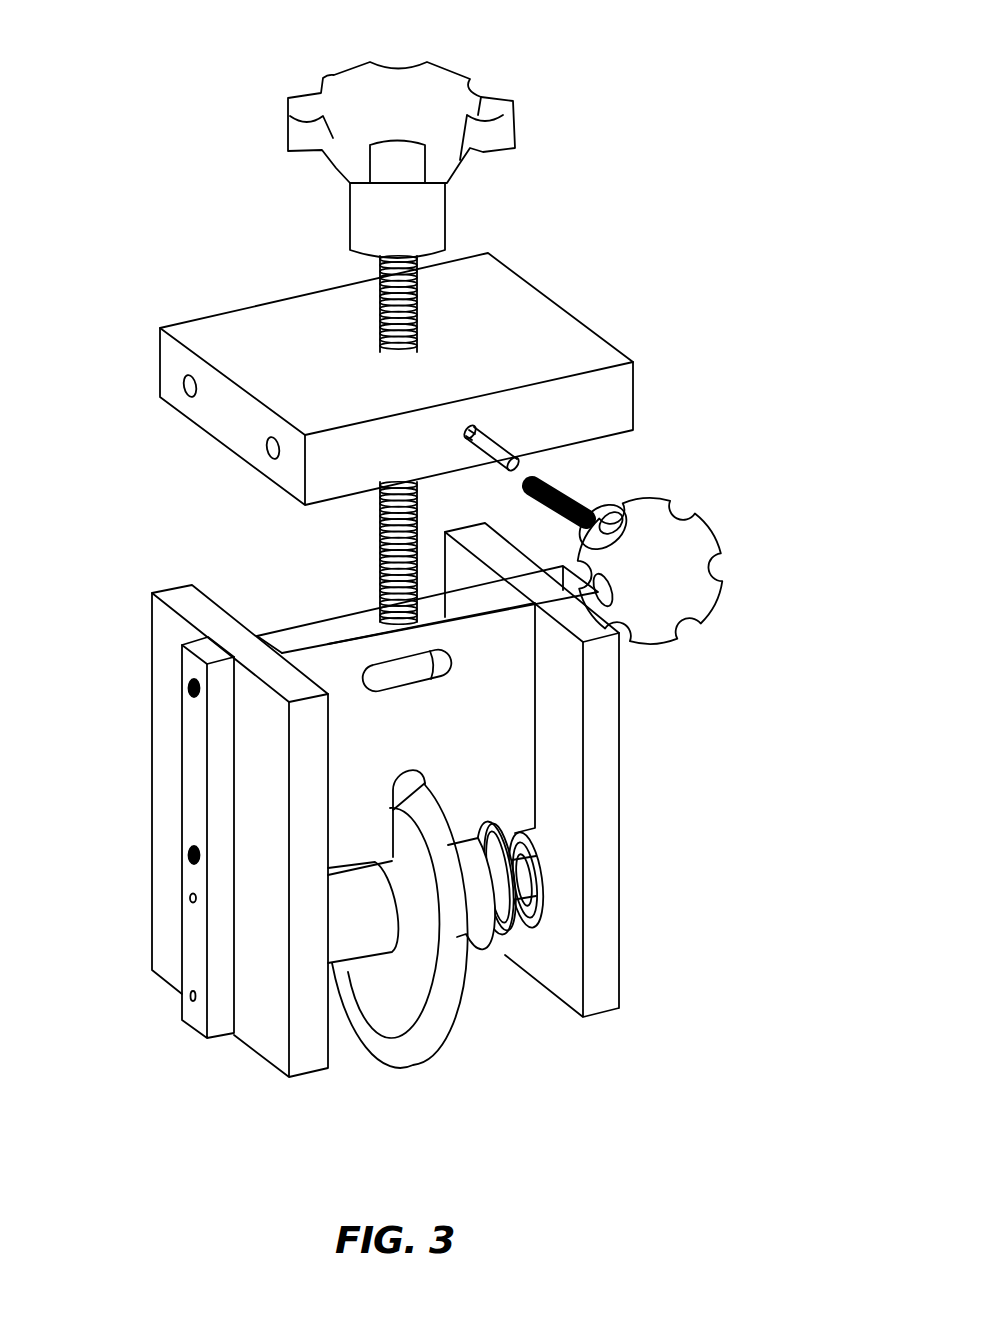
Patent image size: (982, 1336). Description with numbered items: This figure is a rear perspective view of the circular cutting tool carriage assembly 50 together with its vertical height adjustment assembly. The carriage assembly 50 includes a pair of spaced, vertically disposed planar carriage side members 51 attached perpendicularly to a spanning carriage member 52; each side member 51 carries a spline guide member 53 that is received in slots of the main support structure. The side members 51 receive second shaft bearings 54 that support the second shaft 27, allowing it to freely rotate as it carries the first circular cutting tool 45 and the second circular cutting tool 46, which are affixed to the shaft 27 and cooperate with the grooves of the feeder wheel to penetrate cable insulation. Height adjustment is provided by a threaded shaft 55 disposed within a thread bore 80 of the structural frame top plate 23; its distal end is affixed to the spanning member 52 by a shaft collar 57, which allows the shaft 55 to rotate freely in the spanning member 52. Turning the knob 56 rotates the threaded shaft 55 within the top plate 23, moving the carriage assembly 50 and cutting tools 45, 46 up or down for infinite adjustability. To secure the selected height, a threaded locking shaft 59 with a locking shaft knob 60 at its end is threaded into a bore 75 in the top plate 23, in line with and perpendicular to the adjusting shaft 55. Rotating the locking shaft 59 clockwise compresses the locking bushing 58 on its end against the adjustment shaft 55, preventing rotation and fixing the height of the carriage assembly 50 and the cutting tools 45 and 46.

The structural frame top plate 23 is at (227, 332).
The second shaft 27 is at (350, 942).
The first circular cutting tool 45 is at (422, 1047).
The second circular cutting tool 46 is at (500, 980).
The cutting tool carriage assembly 50 is at (425, 715).
The carriage side member 51 is at (603, 988).
The spanning carriage member 52 is at (290, 642).
The spline guide member 53 is at (193, 1017).
The second shaft bearings 54 is at (541, 916).
The threaded shaft 55 is at (418, 302).
The knob 56 is at (463, 68).
The shaft collar 57 is at (385, 640).
The locking bushing 58 is at (495, 447).
The threaded locking shaft 59 is at (573, 490).
The locking shaft knob 60 is at (717, 528).
The bore 75 is at (475, 427).
The thread bore 80 is at (378, 353).